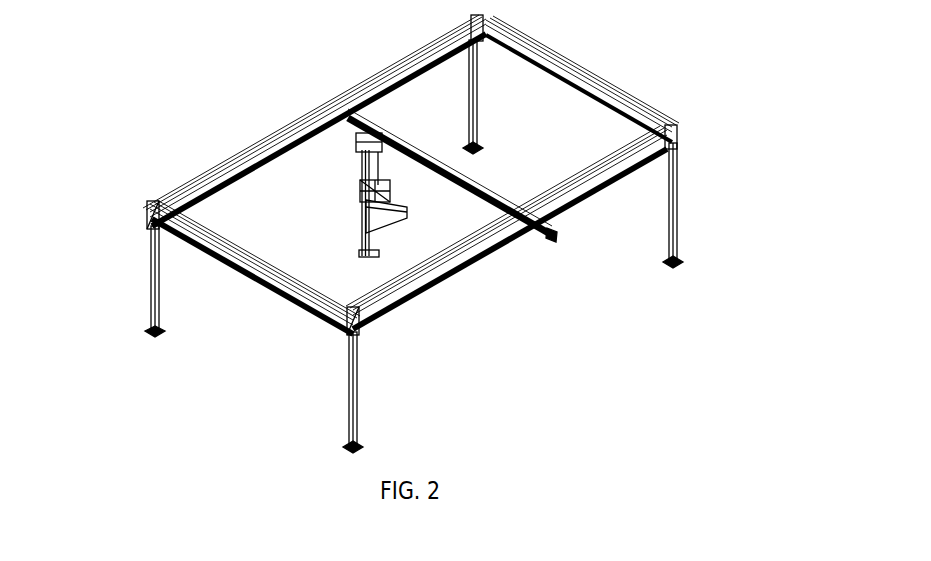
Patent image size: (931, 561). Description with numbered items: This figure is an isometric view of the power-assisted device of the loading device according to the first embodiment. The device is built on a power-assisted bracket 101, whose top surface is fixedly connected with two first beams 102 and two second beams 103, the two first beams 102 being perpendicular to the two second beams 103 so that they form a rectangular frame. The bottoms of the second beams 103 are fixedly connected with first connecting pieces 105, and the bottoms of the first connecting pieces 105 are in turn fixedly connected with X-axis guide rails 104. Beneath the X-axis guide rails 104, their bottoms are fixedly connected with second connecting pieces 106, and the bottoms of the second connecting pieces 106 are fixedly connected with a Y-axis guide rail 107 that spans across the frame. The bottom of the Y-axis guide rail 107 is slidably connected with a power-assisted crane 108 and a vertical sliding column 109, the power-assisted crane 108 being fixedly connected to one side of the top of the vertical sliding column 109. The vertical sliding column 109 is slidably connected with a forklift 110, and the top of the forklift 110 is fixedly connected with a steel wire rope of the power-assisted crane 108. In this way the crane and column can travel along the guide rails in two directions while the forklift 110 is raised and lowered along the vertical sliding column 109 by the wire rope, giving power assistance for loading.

The power-assisted bracket 101 is at (360, 375).
The first beams 102 is at (393, 315).
The second beams 103 is at (493, 248).
The X-axis guide rails 104 is at (677, 140).
The first connecting pieces 105 is at (568, 176).
The second connecting pieces 106 is at (320, 104).
The Y-axis guide rail 107 is at (358, 138).
The power-assisted crane 108 is at (357, 150).
The vertical sliding column 109 is at (358, 180).
The forklift 110 is at (360, 203).